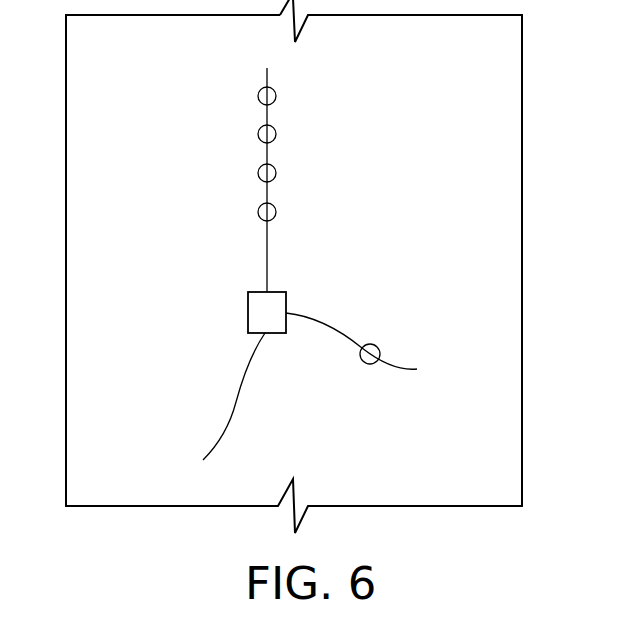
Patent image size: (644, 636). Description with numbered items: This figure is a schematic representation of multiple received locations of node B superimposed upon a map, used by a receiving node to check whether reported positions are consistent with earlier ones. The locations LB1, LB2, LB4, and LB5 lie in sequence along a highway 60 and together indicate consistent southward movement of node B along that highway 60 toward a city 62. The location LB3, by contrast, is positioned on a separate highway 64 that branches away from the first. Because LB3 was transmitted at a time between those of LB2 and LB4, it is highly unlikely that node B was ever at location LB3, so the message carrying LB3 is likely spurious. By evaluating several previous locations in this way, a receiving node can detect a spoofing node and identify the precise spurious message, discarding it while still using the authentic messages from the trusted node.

The highway 60 is at (267, 231).
The city 62 is at (249, 313).
The separate highway 64 is at (335, 330).
The location of node B LB1 is at (258, 96).
The location of node B LB2 is at (258, 134).
The location of node B LB3 is at (373, 364).
The location of node B LB4 is at (258, 173).
The location of node B LB5 is at (258, 212).